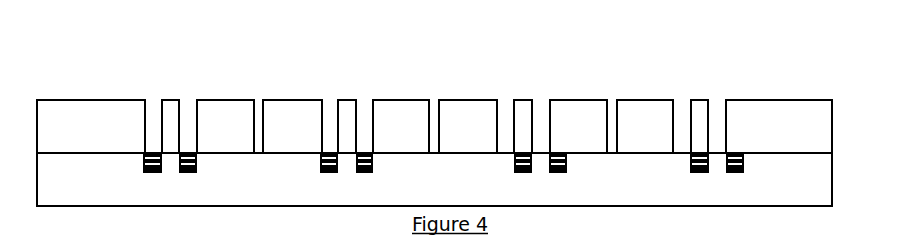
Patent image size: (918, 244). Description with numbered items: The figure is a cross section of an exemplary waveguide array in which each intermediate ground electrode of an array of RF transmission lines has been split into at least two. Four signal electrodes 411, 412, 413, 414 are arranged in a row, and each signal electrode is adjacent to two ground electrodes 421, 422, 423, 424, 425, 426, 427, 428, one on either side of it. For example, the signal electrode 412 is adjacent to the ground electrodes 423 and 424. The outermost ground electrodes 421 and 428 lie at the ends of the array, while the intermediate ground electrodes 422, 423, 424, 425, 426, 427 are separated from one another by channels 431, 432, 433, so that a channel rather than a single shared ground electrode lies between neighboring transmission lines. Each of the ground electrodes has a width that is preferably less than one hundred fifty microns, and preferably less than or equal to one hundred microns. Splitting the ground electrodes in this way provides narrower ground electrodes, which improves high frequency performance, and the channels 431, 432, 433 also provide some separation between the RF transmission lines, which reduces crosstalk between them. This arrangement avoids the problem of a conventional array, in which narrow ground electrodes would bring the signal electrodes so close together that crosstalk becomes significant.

The signal electrode 411 is at (169, 99).
The signal electrode 412 is at (345, 99).
The signal electrode 413 is at (521, 99).
The signal electrode 414 is at (697, 99).
The ground electrode 421 is at (101, 99).
The ground electrode 422 is at (225, 99).
The ground electrode 423 is at (278, 99).
The ground electrode 424 is at (403, 99).
The ground electrode 425 is at (455, 99).
The ground electrode 426 is at (582, 99).
The ground electrode 427 is at (628, 99).
The ground electrode 428 is at (773, 99).
The channel 431 is at (258, 118).
The channel 432 is at (434, 114).
The channel 433 is at (612, 112).